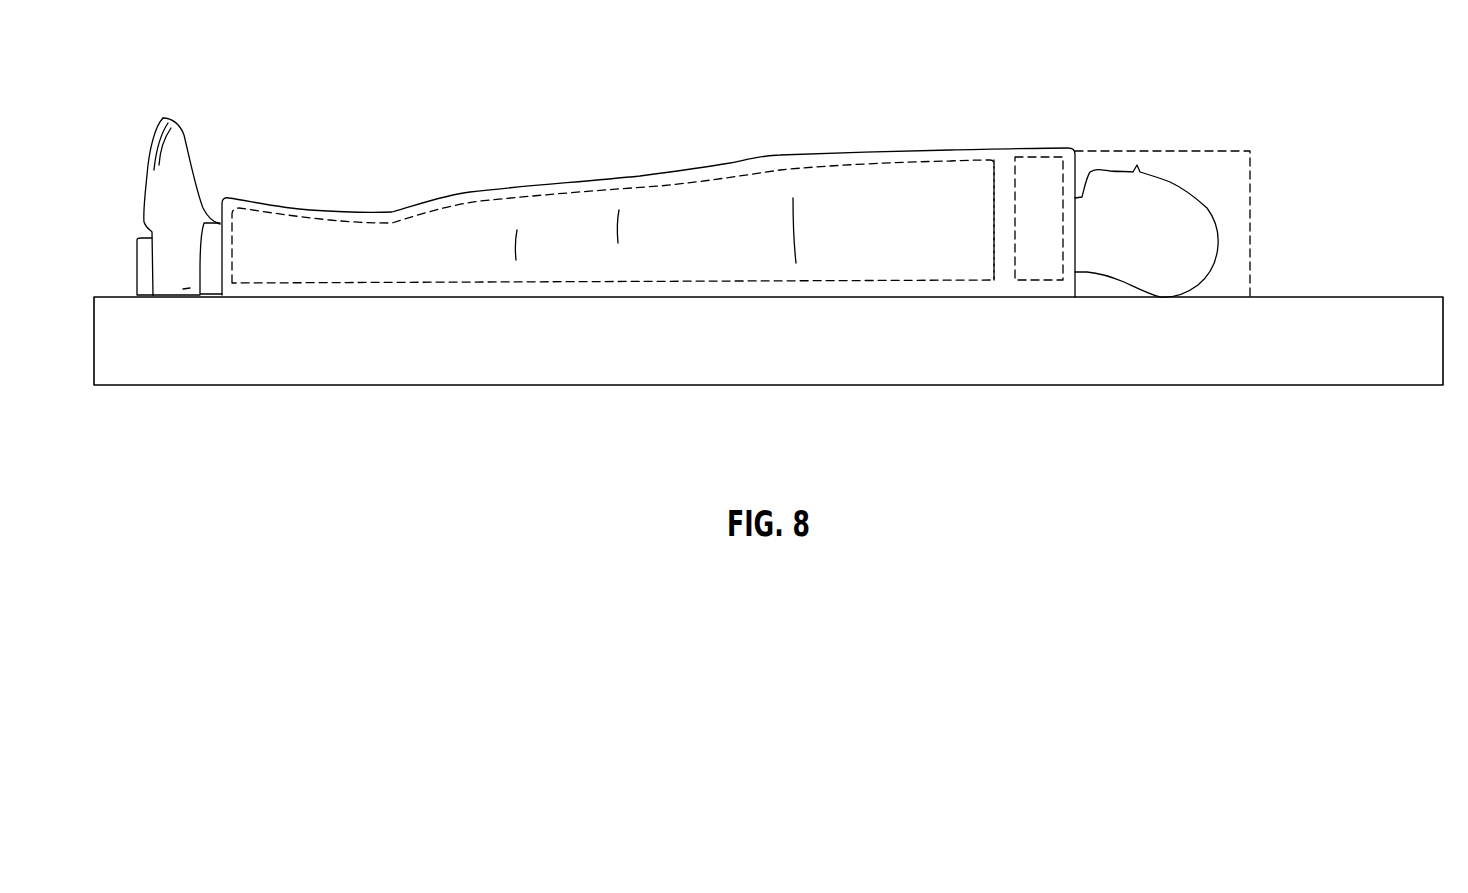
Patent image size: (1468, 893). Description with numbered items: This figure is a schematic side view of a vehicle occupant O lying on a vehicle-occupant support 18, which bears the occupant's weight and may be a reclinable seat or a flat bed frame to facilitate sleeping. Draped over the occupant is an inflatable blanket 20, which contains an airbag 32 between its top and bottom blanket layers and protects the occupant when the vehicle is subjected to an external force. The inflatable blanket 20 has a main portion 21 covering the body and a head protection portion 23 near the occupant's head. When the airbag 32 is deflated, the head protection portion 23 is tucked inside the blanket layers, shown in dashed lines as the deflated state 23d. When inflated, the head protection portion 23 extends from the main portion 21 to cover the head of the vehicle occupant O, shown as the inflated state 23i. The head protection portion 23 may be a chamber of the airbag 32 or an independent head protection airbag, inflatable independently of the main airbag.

The vehicle-occupant support 18 is at (1358, 350).
The inflatable blanket 20 is at (660, 124).
The main portion 21 is at (857, 150).
The airbag 32 is at (296, 215).
The head protection portion 23 is at (1052, 147).
The head protection portion in deflated configuration 23d is at (1018, 147).
The head protection portion in inflated configuration 23i is at (1216, 148).
The vehicle occupant O is at (1208, 218).